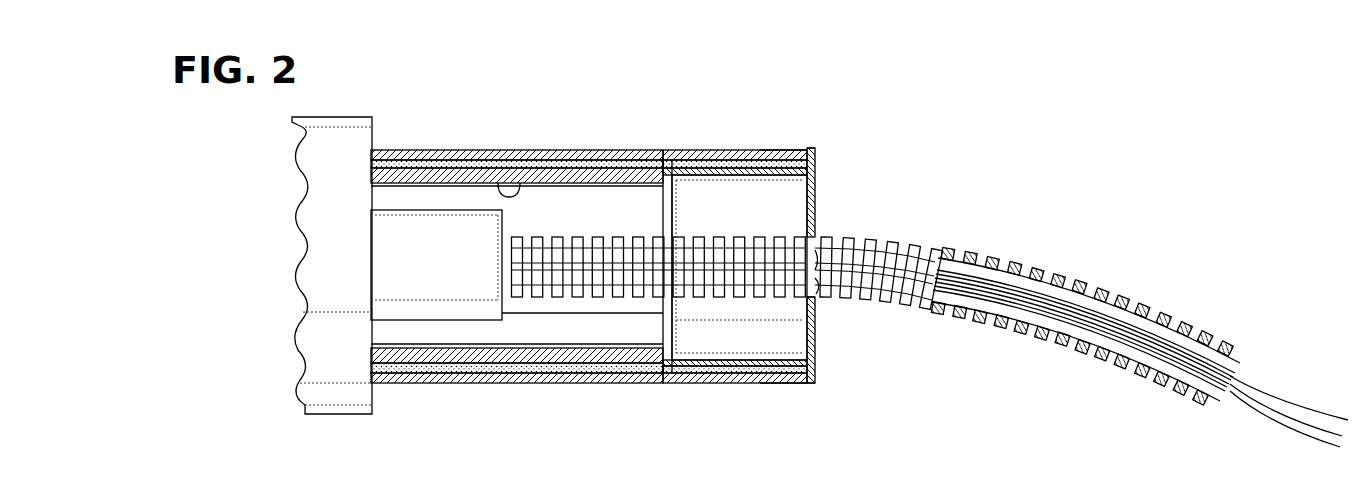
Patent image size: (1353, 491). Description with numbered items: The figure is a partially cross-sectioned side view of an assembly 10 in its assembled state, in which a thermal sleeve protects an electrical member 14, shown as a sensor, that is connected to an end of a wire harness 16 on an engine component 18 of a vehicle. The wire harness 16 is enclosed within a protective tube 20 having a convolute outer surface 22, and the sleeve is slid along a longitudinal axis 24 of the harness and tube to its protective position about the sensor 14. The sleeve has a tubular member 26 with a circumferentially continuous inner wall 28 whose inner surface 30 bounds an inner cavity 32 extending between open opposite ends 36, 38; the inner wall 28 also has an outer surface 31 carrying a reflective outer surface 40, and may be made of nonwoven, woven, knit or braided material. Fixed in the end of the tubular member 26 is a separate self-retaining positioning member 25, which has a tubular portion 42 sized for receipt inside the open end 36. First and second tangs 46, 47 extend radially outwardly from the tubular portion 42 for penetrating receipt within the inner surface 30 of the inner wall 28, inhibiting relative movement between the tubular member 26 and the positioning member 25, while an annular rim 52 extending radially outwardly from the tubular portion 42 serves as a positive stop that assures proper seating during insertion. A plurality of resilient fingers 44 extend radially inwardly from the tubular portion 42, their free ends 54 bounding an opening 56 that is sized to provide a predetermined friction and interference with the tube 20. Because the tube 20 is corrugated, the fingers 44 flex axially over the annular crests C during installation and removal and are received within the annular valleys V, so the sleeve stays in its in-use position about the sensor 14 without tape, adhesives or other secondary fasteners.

The assembly 10 is at (867, 97).
The electrical member 14 is at (428, 210).
The wire harness 16 is at (1283, 408).
The engine component 18 is at (343, 117).
The tube 20 is at (1140, 291).
The outer surface 22 is at (935, 252).
The longitudinal axis 24 is at (590, 237).
The self-retaining positioning member 25 is at (831, 362).
The tubular member 26 is at (651, 151).
The inner wall 28 is at (437, 367).
The inner surface 30 is at (516, 178).
The outer surface 31 is at (463, 162).
The inner cavity 32 is at (550, 206).
The open end 36 is at (818, 383).
The open end 38 is at (372, 372).
The reflective outer surface 40 is at (395, 150).
The tubular portion 42 is at (745, 166).
The finger 44 is at (816, 215).
The first tang 46 is at (779, 150).
The second tang 47 is at (697, 165).
The annular rim 52 is at (814, 148).
The free end 54 is at (820, 285).
The opening 56 is at (815, 262).
The annular valley V is at (1030, 275).
The annular crest C is at (1070, 292).